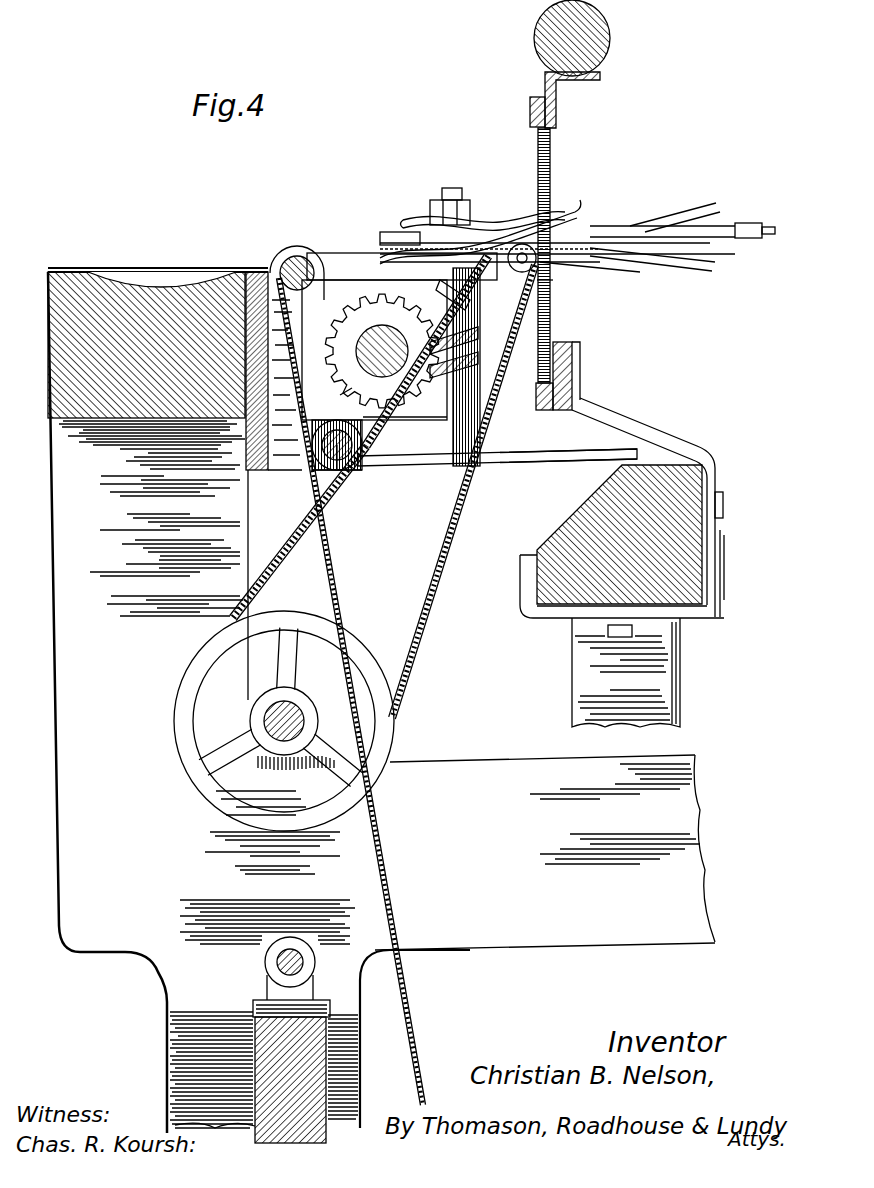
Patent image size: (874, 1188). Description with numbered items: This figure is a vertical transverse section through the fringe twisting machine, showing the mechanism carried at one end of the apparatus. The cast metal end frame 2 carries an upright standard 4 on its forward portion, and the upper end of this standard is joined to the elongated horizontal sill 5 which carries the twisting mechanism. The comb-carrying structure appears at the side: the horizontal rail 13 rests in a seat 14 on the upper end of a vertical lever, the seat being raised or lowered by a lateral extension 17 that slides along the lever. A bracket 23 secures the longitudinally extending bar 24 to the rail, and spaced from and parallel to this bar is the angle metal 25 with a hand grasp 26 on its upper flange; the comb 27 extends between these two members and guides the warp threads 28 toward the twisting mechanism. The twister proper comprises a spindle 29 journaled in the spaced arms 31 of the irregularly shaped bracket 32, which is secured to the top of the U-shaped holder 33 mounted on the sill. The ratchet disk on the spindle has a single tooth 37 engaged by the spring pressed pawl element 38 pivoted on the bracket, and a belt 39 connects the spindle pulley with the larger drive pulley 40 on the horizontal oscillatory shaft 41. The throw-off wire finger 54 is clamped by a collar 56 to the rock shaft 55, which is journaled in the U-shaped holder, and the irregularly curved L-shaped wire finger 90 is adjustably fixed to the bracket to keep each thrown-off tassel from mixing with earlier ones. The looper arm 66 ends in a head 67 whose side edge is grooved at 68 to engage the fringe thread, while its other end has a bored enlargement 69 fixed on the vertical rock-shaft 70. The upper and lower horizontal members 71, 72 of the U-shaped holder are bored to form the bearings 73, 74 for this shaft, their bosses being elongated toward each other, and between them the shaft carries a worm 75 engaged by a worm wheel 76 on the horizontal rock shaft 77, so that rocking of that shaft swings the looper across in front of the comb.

The end frame 2 is at (468, 932).
The standard 4 is at (56, 556).
The sill 5 is at (72, 292).
The rail 13 is at (687, 535).
The seat 14 is at (712, 618).
The lateral extension 17 is at (660, 668).
The bracket 23 is at (683, 450).
The bar 24 is at (562, 378).
The angle metal 25 is at (545, 76).
The hand grasp 26 is at (566, 37).
The comb 27 is at (550, 149).
The warp threads 28 is at (632, 262).
The spindle 29 is at (553, 263).
The spaced arms 31 is at (553, 288).
The bracket 32 is at (400, 283).
The U-shaped holder 33 is at (257, 288).
The tooth 37 is at (470, 300).
The pawl element 38 is at (497, 222).
The belt 39 is at (445, 550).
The drive pulley 40 is at (363, 653).
The oscillatory shaft 41 is at (268, 716).
The wire finger 54 is at (547, 463).
The rock shaft 55 is at (338, 472).
The collar 56 is at (358, 468).
The looper arm 66 is at (612, 228).
The head 67 is at (745, 222).
The groove 68 is at (728, 240).
The enlargement 69 is at (430, 218).
The rock-shaft 70 is at (452, 190).
The upper horizontal member 71 is at (340, 262).
The lower horizontal member 72 is at (428, 445).
The bearing 73 is at (470, 331).
The bearing 74 is at (480, 390).
The worm 75 is at (470, 355).
The worm wheel 76 is at (340, 395).
The rock shaft 77 is at (356, 350).
The wire finger 90 is at (575, 212).